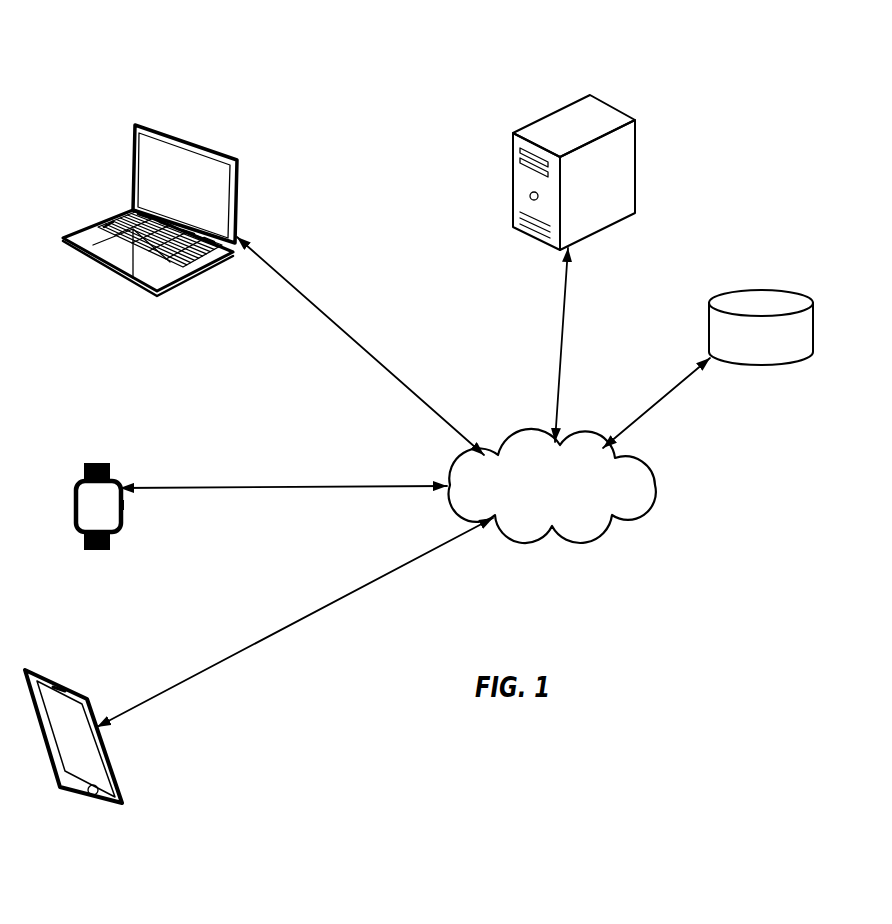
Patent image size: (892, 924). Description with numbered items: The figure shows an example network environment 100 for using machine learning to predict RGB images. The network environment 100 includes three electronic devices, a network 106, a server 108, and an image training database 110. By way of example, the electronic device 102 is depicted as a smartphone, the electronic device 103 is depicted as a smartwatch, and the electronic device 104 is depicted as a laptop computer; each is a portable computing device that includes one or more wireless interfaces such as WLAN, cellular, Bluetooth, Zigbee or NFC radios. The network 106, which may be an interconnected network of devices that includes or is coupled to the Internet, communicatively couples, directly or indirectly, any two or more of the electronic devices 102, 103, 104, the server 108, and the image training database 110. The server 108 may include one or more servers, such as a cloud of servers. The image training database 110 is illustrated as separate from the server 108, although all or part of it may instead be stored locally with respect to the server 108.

The network environment 100 is at (142, 73).
The electronic device 102 is at (68, 804).
The electronic device 103 is at (95, 551).
The electronic device 104 is at (150, 293).
The network 106 is at (582, 525).
The server 108 is at (528, 124).
The image training database 110 is at (760, 365).